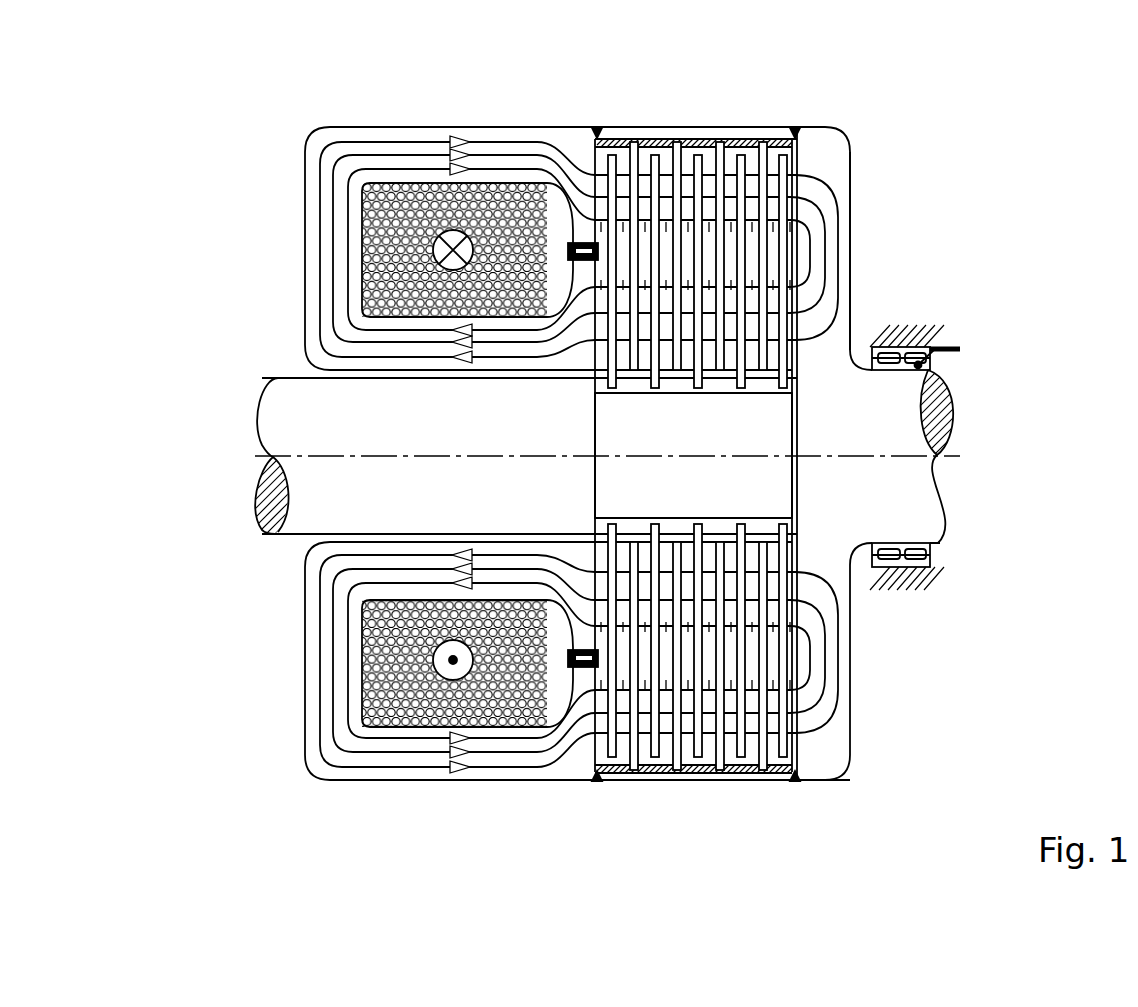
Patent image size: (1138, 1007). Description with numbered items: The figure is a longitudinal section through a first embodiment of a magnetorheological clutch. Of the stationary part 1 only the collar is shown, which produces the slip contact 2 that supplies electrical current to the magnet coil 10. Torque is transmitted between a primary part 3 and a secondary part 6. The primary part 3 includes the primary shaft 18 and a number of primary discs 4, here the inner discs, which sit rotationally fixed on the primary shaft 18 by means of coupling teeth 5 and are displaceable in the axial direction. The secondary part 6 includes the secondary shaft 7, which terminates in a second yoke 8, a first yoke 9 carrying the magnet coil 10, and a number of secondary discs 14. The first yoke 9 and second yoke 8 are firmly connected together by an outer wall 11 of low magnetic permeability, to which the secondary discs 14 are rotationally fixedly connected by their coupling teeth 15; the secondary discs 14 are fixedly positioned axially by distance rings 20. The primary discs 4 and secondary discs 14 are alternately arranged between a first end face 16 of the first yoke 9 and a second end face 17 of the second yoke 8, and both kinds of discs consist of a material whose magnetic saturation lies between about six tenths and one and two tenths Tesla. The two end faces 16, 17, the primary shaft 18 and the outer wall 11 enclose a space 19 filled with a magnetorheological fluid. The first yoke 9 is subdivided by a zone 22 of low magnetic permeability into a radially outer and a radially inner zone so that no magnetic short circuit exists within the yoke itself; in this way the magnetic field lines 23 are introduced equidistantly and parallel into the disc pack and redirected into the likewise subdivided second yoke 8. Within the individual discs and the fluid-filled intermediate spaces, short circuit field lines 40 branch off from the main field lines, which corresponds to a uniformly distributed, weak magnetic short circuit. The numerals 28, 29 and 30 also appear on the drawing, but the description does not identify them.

The stationary part 1 is at (907, 328).
The slip contact 2 is at (958, 350).
The primary part 3 is at (308, 513).
The primary discs 4 is at (783, 188).
The coupling teeth 5 is at (783, 382).
The secondary part 6 is at (865, 608).
The secondary shaft 7 is at (920, 518).
The second yoke 8 is at (830, 150).
The first yoke 9 is at (580, 138).
The magnet coil 10 is at (403, 202).
The outer wall 11 is at (728, 777).
The secondary discs 14 is at (762, 210).
The coupling teeth 15 is at (762, 146).
The first end face 16 is at (600, 742).
The second end face 17 is at (795, 690).
The primary shaft 18 is at (746, 473).
The space 19 is at (687, 678).
The distance rings 20 is at (597, 132).
The zone of low magnetic permeability 22 is at (578, 243).
The magnetic field lines 23 is at (318, 148).
The stator yoke 28 is at (783, 727).
The conductor bar 29 is at (783, 612).
The rotation axis 30 is at (305, 445).
The short circuit field lines 40 is at (622, 677).